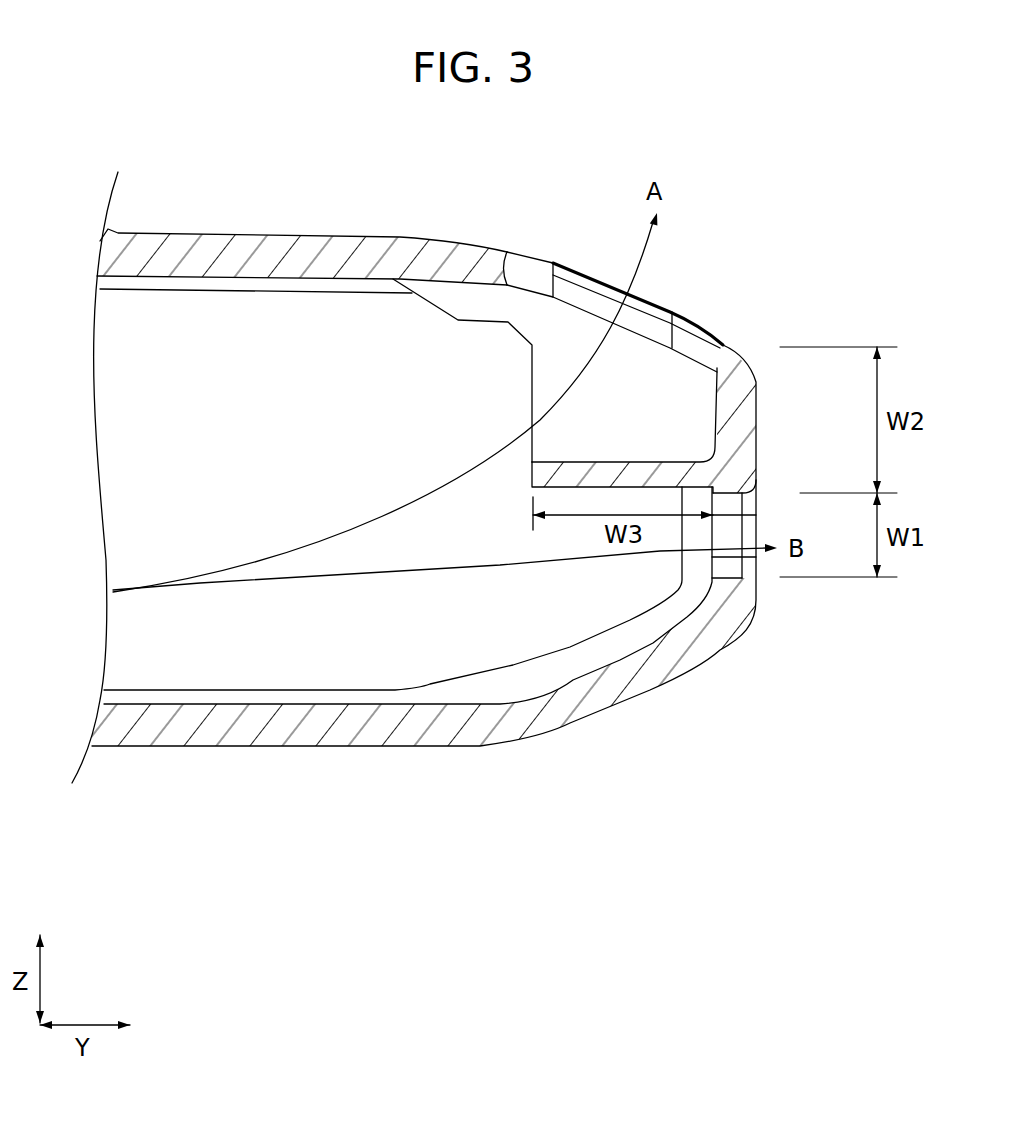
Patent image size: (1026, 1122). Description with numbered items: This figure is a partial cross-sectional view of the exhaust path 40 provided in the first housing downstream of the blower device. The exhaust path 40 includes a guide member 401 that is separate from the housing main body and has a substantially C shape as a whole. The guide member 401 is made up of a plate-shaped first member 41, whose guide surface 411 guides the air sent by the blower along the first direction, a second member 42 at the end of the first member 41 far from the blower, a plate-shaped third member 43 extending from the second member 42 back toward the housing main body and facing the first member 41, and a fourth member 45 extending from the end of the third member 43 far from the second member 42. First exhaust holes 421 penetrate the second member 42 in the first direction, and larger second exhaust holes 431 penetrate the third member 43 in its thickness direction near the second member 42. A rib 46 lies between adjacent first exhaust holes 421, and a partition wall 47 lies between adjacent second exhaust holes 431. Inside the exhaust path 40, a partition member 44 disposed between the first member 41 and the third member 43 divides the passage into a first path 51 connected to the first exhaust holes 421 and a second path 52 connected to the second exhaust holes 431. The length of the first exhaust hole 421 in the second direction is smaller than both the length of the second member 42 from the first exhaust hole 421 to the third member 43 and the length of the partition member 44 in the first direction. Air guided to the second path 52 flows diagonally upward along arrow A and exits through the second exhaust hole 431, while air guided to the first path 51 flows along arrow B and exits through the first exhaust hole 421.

The exhaust path 40 is at (547, 755).
The guide member 401 is at (348, 228).
The first member 41 is at (205, 748).
The guide surface 411 is at (440, 703).
The second member 42 is at (743, 605).
The first exhaust hole 421 is at (725, 577).
The third member 43 is at (663, 332).
The second exhaust hole 431 is at (506, 268).
The partition member 44 is at (540, 472).
The fourth member 45 is at (215, 247).
The rib 46 is at (510, 680).
The partition wall 47 is at (552, 370).
The first path 51 is at (622, 600).
The second path 52 is at (652, 429).